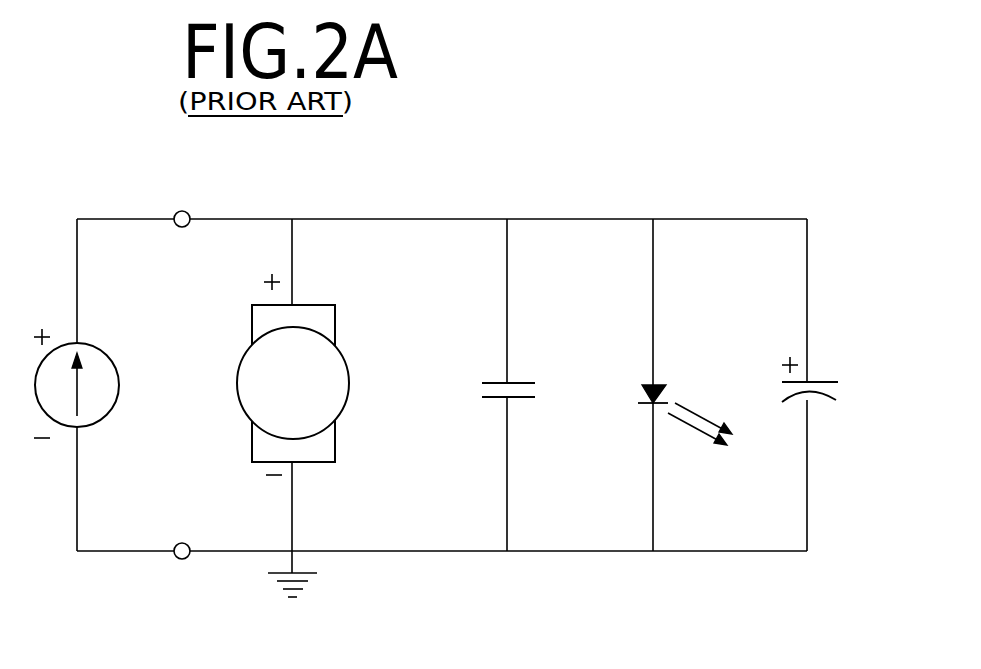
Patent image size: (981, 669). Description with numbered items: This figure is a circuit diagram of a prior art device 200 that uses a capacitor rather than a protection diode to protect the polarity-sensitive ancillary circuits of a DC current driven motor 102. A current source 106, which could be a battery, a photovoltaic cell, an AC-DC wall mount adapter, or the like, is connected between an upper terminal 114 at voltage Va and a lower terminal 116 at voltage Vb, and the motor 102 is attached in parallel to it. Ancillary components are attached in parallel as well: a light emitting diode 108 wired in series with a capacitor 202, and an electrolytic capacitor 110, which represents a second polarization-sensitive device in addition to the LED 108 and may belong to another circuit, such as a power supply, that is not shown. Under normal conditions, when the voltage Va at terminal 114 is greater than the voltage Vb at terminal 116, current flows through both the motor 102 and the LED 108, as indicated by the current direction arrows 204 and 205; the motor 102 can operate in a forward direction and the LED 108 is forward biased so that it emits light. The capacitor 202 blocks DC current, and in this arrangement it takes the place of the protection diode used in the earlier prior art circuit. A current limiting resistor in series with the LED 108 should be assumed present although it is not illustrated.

The device 200 is at (748, 197).
The DC motor 102 is at (346, 405).
The current source 106 is at (100, 422).
The light emitting diode 108 is at (657, 385).
The electrolytic capacitor 110 is at (820, 382).
The terminal 114 is at (181, 210).
The terminal 116 is at (181, 559).
The capacitor 202 is at (520, 383).
The current direction arrow 204 is at (283, 256).
The current direction arrow 205 is at (633, 256).